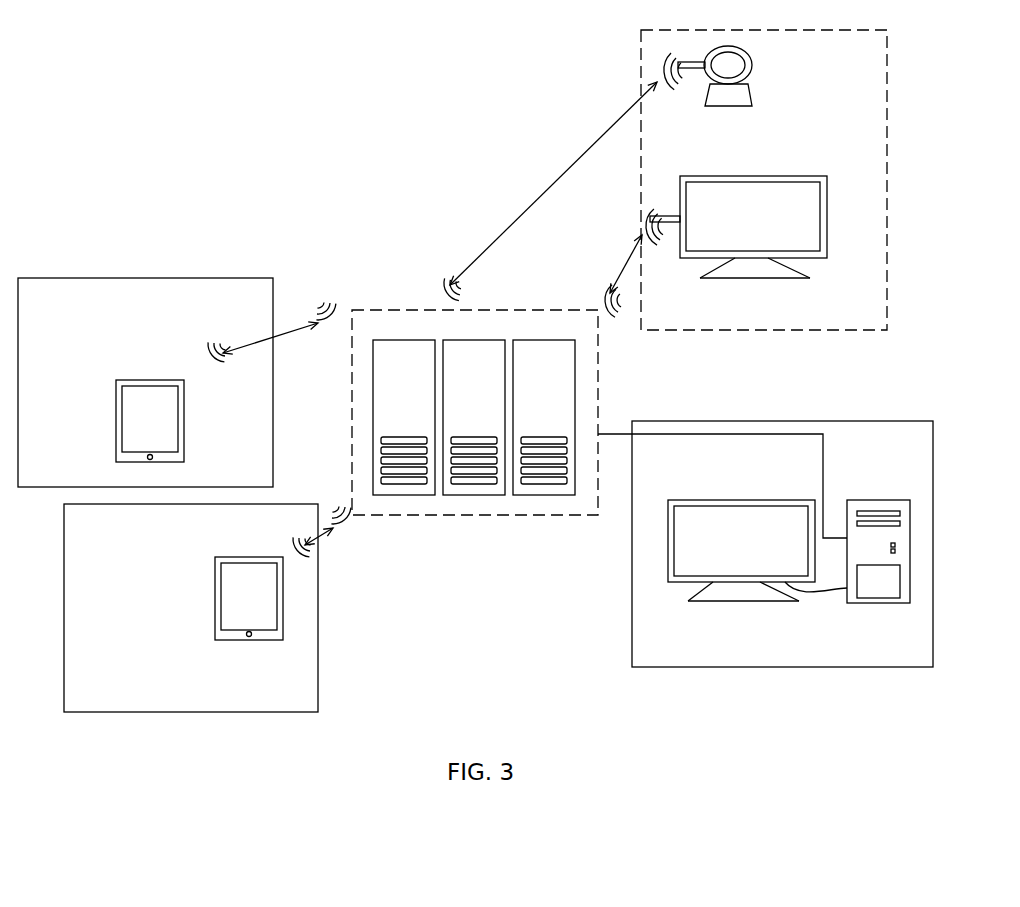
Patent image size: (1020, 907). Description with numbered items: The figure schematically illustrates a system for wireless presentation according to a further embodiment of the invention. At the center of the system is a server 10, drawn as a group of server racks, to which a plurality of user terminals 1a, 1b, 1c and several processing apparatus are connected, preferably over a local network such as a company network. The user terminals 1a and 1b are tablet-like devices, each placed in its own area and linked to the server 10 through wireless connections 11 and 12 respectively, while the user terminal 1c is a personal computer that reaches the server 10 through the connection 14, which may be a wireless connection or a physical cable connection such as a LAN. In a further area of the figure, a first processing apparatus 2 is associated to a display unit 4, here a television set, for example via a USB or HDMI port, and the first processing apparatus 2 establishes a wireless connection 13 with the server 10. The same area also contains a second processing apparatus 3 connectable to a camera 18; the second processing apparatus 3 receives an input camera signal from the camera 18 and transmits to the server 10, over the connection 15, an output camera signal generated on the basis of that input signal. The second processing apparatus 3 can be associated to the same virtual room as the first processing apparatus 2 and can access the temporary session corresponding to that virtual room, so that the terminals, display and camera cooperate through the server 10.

The user terminal 1a is at (127, 372).
The user terminal 1b is at (208, 580).
The user terminal 1c is at (782, 497).
The first processing apparatus 2 is at (663, 213).
The second processing apparatus 3 is at (685, 72).
The display unit 4 is at (827, 257).
The server 10 is at (372, 298).
The connection 11 is at (262, 338).
The connection 12 is at (334, 546).
The connection 13 is at (628, 281).
The connection 14 is at (806, 430).
The connection 15 is at (560, 183).
The camera 18 is at (763, 63).